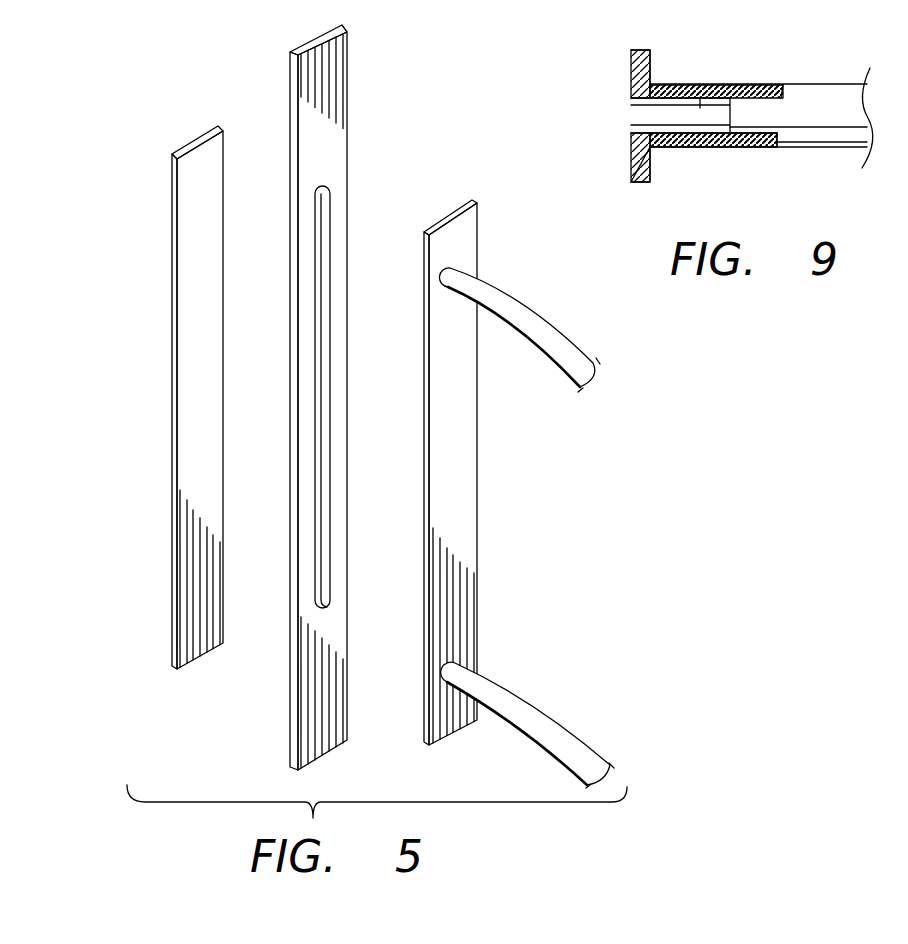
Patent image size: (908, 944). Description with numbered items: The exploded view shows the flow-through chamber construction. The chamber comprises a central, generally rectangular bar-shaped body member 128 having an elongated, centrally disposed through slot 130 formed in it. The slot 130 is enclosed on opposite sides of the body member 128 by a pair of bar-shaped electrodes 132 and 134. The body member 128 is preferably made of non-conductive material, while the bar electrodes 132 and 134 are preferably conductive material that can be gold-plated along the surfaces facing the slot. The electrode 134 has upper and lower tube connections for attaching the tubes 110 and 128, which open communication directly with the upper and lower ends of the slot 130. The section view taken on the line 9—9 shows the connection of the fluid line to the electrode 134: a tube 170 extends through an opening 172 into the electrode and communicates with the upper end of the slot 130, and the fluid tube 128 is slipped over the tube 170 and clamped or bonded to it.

In FIG. 5, the tube 110 is at (532, 708).
In FIG. 5, the bar-shaped body member 128 is at (359, 397).
In FIG. 9, the bar-shaped body member 128 is at (805, 92).
In FIG. 5, the through slot 130 is at (316, 223).
In FIG. 5, the bar-shaped electrode 132 is at (172, 293).
In FIG. 5, the bar-shaped electrode 134 is at (480, 467).
In FIG. 9, the bar-shaped electrode 134 is at (630, 66).
In FIG. 9, the tube 170 is at (700, 92).
In FIG. 9, the opening 172 is at (632, 122).
In FIG. 5, the section line 9 is at (507, 257).